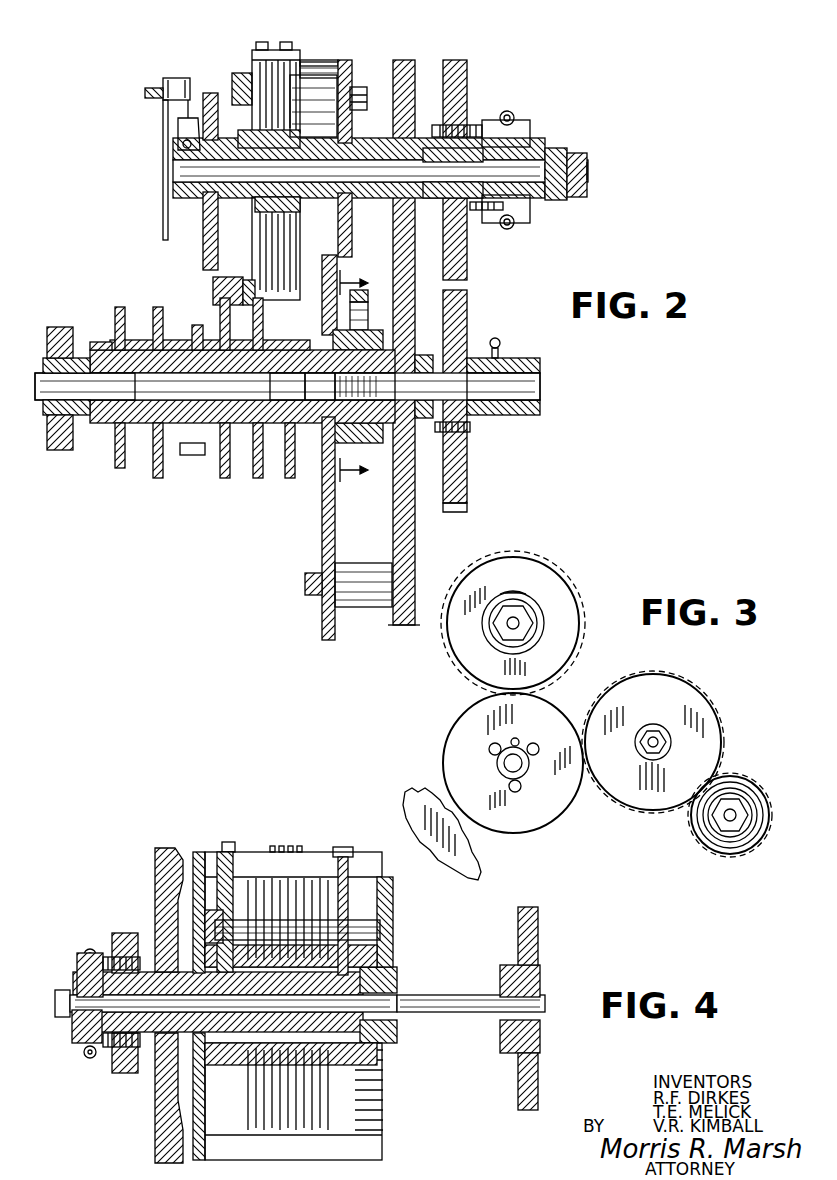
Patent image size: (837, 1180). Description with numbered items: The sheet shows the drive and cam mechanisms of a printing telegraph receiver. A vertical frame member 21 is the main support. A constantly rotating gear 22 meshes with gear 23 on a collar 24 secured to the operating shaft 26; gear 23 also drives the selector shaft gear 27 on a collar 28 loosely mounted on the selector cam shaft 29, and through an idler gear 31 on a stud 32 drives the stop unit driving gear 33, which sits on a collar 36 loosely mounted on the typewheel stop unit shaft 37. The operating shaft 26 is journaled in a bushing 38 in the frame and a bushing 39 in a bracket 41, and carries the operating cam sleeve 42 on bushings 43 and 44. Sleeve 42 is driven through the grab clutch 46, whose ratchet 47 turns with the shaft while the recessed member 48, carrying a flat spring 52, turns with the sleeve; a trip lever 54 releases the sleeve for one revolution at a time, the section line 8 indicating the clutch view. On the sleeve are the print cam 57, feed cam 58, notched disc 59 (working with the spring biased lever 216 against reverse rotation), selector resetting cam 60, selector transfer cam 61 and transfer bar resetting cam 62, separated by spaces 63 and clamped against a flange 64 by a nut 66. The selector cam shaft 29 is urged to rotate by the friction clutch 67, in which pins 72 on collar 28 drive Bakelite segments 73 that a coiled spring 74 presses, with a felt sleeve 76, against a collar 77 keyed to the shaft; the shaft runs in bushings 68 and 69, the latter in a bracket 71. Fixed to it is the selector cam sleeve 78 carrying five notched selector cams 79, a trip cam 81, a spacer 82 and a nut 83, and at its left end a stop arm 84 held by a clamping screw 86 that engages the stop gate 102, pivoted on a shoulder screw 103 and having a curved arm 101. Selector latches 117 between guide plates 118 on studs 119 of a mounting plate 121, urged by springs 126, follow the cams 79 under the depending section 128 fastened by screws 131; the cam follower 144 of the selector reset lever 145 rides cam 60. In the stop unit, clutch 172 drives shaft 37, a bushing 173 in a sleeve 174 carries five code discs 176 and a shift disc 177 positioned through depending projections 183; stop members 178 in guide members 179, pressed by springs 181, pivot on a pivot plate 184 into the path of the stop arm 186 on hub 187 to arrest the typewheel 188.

In FIG. 2, the section line 8- 8 is at (361, 376).
In FIG. 2, the frame member 21 is at (415, 512).
In FIG. 4, the frame member 21 is at (168, 850).
In FIG. 3, the gear 22 is at (420, 795).
In FIG. 2, the operating shaft gear 23 is at (462, 324).
In FIG. 3, the operating shaft gear 23 is at (466, 733).
In FIG. 2, the collar 24 is at (498, 412).
In FIG. 3, the collar 24 is at (540, 749).
In FIG. 2, the operating shaft 26 is at (537, 383).
In FIG. 3, the operating shaft 26 is at (505, 767).
In FIG. 2, the selector shaft gear 27 is at (468, 82).
In FIG. 3, the selector shaft gear 27 is at (565, 585).
In FIG. 2, the collar 28 is at (440, 194).
In FIG. 2, the selector cam shaft 29 is at (592, 172).
In FIG. 3, the selector cam shaft 29 is at (519, 627).
In FIG. 3, the idler gear 31 is at (708, 718).
In FIG. 3, the stud 32 is at (653, 730).
In FIG. 3, the stop unit driving gear 33 is at (723, 782).
In FIG. 4, the stop unit driving gear 33 is at (125, 933).
In FIG. 4, the collar 36 is at (103, 955).
In FIG. 3, the typewheel stop unit shaft 37 is at (716, 838).
In FIG. 4, the typewheel stop unit shaft 37 is at (447, 995).
In FIG. 2, the bushing 38 is at (420, 352).
In FIG. 2, the bushing 39 is at (48, 410).
In FIG. 2, the bracket 41 is at (63, 450).
In FIG. 2, the operating cam sleeve 42 is at (287, 386).
In FIG. 2, the bushing 43 is at (85, 386).
In FIG. 2, the bushing 44 is at (285, 386).
In FIG. 2, the grab clutch 46 is at (364, 330).
In FIG. 2, the ratchet 47 is at (365, 386).
In FIG. 2, the recessed member 48 is at (320, 386).
In FIG. 2, the flat spring 52 is at (358, 316).
In FIG. 2, the trip lever 54 is at (356, 290).
In FIG. 2, the print cam 57 is at (118, 470).
In FIG. 2, the feed cam 58 is at (157, 480).
In FIG. 2, the notched disc 59 is at (197, 326).
In FIG. 2, the selector resetting cam 60 is at (225, 478).
In FIG. 2, the selector transfer cam 61 is at (257, 480).
In FIG. 2, the transfer bar resetting cam 62 is at (290, 480).
In FIG. 2, the spacer 63 is at (160, 320).
In FIG. 2, the flange 64 is at (320, 300).
In FIG. 2, the nut 66 is at (100, 342).
In FIG. 2, the friction clutch 67 is at (536, 117).
In FIG. 3, the friction clutch 67 is at (515, 556).
In FIG. 2, the bushing 68 is at (420, 148).
In FIG. 2, the bushing 69 is at (206, 200).
In FIG. 2, the bracket 71 is at (213, 93).
In FIG. 2, the pins 72 is at (486, 212).
In FIG. 2, the Bakelite segments 73 is at (514, 228).
In FIG. 3, the Bakelite segments 73 is at (542, 620).
In FIG. 2, the coiled spring 74 is at (510, 112).
In FIG. 3, the coiled spring 74 is at (525, 582).
In FIG. 2, the felt sleeve 76 is at (532, 136).
In FIG. 2, the collar 77 is at (553, 149).
In FIG. 3, the collar 77 is at (496, 622).
In FIG. 2, the selector cam sleeve 78 is at (325, 182).
In FIG. 2, the selector cams 79 is at (292, 145).
In FIG. 2, the trip cam 81 is at (358, 108).
In FIG. 2, the spacer 82 is at (318, 137).
In FIG. 2, the nut 83 is at (246, 135).
In FIG. 2, the stop arm 84 is at (180, 128).
In FIG. 2, the clamping screw 86 is at (183, 146).
In FIG. 2, the curved arm 101 is at (163, 210).
In FIG. 2, the stop gate 102 is at (175, 78).
In FIG. 2, the shoulder screw 103 is at (148, 95).
In FIG. 2, the selector latches 117 is at (262, 226).
In FIG. 2, the guide plates 118 is at (266, 252).
In FIG. 2, the studs 119 is at (332, 66).
In FIG. 2, the mounting plate 121 is at (352, 62).
In FIG. 2, the springs 126 is at (318, 78).
In FIG. 2, the depending section 128 is at (258, 48).
In FIG. 2, the screws 131 is at (284, 42).
In FIG. 2, the cam follower 144 is at (213, 282).
In FIG. 2, the selector reset lever 145 is at (243, 300).
In FIG. 3, the friction clutch 172 is at (766, 786).
In FIG. 4, the friction clutch 172 is at (86, 1063).
In FIG. 4, the bushing 173 is at (232, 992).
In FIG. 4, the sleeve 174 is at (252, 992).
In FIG. 4, the code discs 176 is at (290, 930).
In FIG. 4, the shift disc 177 is at (305, 900).
In FIG. 4, the stop members 178 is at (367, 853).
In FIG. 4, the guide members 179 is at (228, 845).
In FIG. 4, the springs 181 is at (252, 880).
In FIG. 4, the depending projections 183 is at (299, 846).
In FIG. 4, the pivot plate 184 is at (222, 852).
In FIG. 4, the stop arm 186 is at (393, 922).
In FIG. 4, the hub 187 is at (398, 984).
In FIG. 4, the typewheel 188 is at (518, 1077).
In FIG. 2, the spring biased lever 216 is at (183, 455).